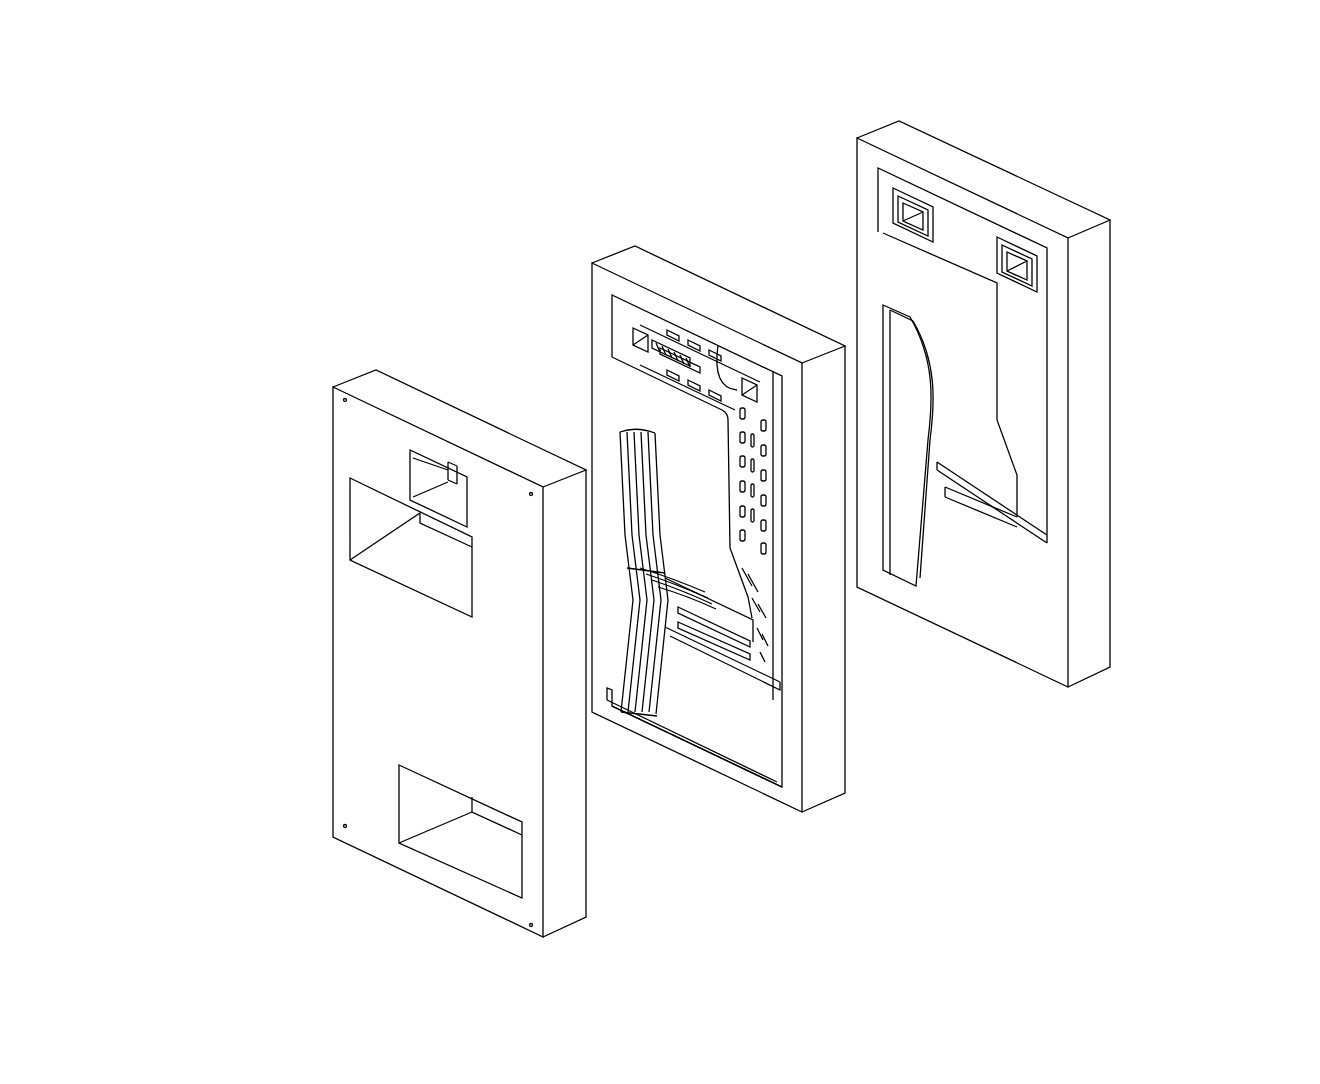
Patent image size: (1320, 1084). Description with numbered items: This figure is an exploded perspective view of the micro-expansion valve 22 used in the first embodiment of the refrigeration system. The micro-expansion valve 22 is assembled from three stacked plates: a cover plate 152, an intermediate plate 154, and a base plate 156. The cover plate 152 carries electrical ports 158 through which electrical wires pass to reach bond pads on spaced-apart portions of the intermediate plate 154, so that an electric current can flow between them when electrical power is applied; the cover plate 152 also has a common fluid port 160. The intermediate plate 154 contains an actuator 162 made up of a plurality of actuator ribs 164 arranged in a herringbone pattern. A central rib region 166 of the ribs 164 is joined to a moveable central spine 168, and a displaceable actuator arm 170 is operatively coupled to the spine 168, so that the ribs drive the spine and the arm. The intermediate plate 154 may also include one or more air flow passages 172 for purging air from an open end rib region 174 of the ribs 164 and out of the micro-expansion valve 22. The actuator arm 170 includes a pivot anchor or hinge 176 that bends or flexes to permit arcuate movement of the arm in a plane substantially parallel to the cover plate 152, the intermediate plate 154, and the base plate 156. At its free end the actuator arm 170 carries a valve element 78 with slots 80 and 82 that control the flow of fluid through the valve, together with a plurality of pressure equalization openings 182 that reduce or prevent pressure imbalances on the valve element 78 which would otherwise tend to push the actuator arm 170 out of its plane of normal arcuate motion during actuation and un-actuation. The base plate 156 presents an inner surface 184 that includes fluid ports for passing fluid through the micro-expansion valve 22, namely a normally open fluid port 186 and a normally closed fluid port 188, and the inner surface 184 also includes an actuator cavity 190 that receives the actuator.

The micro-expansion valve 22 is at (430, 206).
The valve element 78 is at (758, 370).
The slot 80 is at (718, 345).
The slot 82 is at (658, 343).
The cover plate 152 is at (375, 380).
The intermediate plate 154 is at (635, 258).
The base plate 156 is at (893, 122).
The electrical ports 158 is at (373, 530).
The common fluid port 160 is at (427, 475).
The actuator 162 is at (626, 432).
The actuator ribs 164 is at (625, 480).
The central rib region 166 is at (633, 575).
The central spine 168 is at (720, 606).
The actuator arm 170 is at (768, 553).
The air flow passages 172 is at (762, 777).
The open end rib region 174 is at (659, 707).
The hinge 176 is at (702, 628).
The pressure equalization openings 182 is at (740, 470).
The inner surface 184 is at (1032, 595).
The normally open fluid port 186 is at (905, 212).
The normally closed fluid port 188 is at (1008, 258).
The actuator cavity 190 is at (1025, 378).